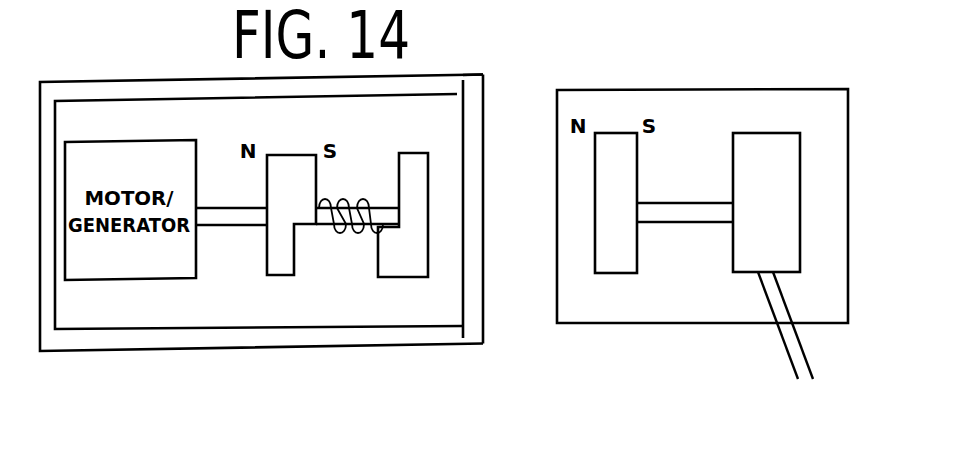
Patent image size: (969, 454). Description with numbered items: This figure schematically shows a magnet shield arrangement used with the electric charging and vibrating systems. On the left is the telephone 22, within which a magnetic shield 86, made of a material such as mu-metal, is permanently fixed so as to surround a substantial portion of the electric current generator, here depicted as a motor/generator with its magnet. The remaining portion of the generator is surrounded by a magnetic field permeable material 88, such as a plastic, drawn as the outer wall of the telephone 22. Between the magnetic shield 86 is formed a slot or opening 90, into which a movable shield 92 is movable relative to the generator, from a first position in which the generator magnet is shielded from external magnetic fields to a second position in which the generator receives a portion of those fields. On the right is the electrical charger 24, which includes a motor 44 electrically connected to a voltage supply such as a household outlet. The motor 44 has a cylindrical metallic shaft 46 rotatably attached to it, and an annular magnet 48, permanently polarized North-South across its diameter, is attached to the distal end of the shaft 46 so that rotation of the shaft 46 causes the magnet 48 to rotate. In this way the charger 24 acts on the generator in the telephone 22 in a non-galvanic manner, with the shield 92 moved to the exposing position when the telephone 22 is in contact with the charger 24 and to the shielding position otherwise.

The telephone 22 is at (52, 90).
The magnetic shield 86 is at (135, 88).
The magnetic field permeable material 88 is at (483, 188).
The slot or opening 90 is at (457, 94).
The movable shield 92 is at (474, 84).
The electrical charger 24 is at (824, 100).
The motor 44 is at (789, 169).
The shaft 46 is at (678, 203).
The magnet 48 is at (625, 241).